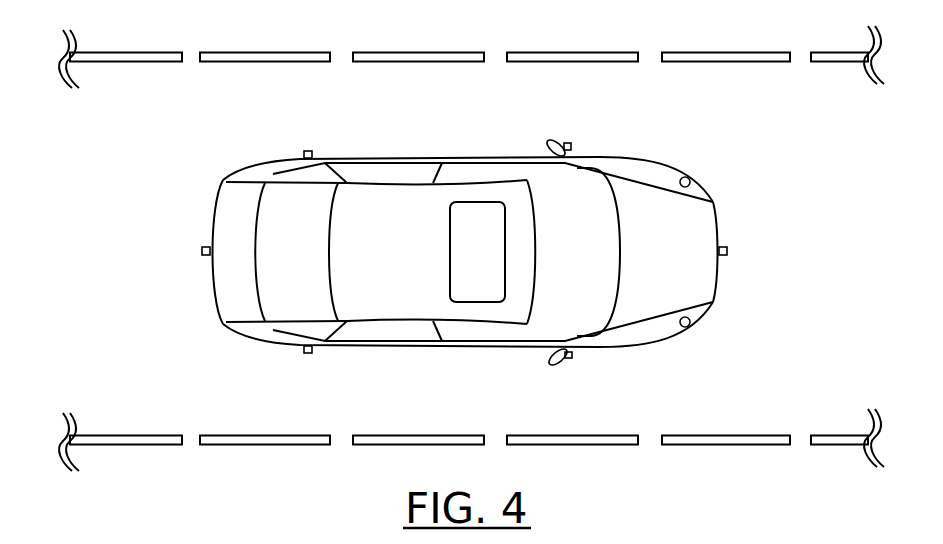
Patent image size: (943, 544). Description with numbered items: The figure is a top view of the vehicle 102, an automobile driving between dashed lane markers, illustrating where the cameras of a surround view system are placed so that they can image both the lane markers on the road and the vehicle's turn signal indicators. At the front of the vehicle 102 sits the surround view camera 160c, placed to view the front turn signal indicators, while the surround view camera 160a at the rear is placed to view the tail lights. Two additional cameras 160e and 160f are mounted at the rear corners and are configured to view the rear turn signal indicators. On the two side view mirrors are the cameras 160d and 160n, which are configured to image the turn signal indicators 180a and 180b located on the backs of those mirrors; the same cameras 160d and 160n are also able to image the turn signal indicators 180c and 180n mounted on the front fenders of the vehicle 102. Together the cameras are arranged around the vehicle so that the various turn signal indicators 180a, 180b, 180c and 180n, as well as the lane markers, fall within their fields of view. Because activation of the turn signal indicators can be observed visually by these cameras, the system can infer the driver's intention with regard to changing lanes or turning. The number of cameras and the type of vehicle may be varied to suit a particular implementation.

The vehicle 102 is at (295, 160).
The surround view camera 160a is at (203, 255).
The surround view camera 160c is at (726, 250).
The camera 160d is at (569, 143).
The camera 160e is at (345, 130).
The camera 160f is at (308, 353).
The camera 160n is at (571, 358).
The turn signal indicator 180a is at (551, 363).
The turn signal indicator 180b is at (550, 139).
The turn signal indicator 180c is at (689, 178).
The front fender turn signal indicator 180n is at (690, 325).